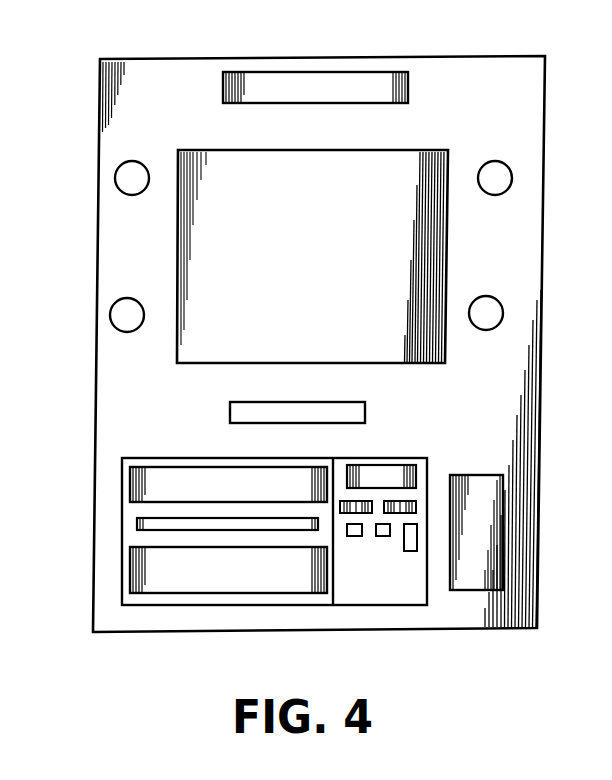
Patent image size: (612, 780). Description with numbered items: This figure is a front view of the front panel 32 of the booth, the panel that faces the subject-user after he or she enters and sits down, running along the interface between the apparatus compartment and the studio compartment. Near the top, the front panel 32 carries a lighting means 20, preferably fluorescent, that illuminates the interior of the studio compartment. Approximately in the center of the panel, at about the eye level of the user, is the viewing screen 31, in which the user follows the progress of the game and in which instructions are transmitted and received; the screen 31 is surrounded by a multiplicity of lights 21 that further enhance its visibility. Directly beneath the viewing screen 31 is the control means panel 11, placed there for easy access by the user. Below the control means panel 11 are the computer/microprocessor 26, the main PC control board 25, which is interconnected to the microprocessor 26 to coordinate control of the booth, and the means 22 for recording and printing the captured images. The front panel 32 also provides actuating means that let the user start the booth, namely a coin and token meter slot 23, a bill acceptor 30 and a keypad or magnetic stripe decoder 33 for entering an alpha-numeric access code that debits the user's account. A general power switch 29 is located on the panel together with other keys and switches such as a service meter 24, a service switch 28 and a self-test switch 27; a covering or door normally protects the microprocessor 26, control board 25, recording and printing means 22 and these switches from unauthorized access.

The front panel 32 is at (184, 44).
The lighting means 20 is at (310, 78).
The viewing screen 31 is at (418, 162).
The lights 21 is at (131, 192).
The control means panel 11 is at (352, 405).
The computer/microprocessor 26 is at (197, 478).
The main PC control board 25 is at (136, 527).
The means for recording and printing 22 is at (137, 575).
The keypad or magnetic stripe decoder 33 is at (387, 472).
The coin and token meter slot 23 is at (347, 500).
The service meter 24 is at (403, 500).
The self-test switch 27 is at (355, 537).
The service switch 28 is at (383, 537).
The general power switch 29 is at (411, 552).
The bill acceptor 30 is at (470, 480).